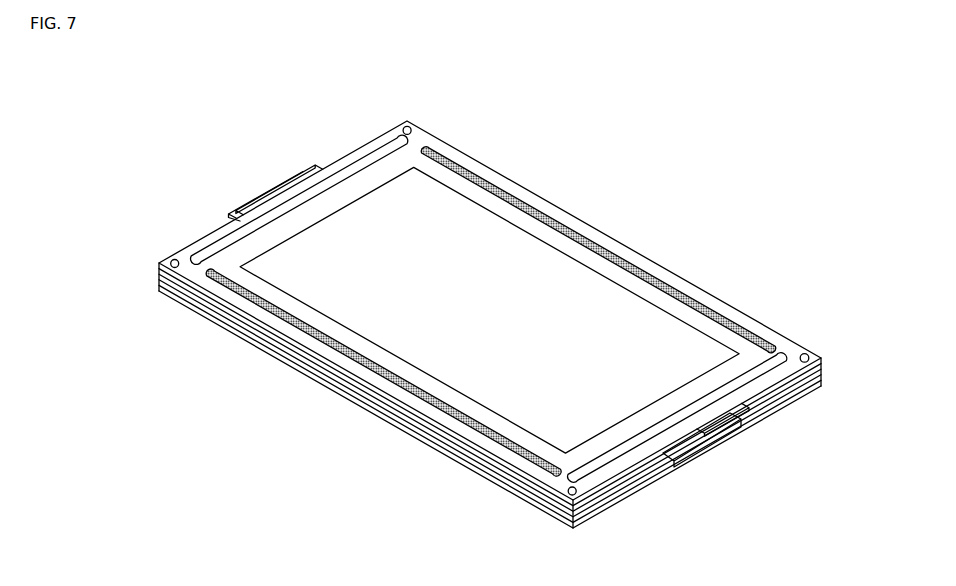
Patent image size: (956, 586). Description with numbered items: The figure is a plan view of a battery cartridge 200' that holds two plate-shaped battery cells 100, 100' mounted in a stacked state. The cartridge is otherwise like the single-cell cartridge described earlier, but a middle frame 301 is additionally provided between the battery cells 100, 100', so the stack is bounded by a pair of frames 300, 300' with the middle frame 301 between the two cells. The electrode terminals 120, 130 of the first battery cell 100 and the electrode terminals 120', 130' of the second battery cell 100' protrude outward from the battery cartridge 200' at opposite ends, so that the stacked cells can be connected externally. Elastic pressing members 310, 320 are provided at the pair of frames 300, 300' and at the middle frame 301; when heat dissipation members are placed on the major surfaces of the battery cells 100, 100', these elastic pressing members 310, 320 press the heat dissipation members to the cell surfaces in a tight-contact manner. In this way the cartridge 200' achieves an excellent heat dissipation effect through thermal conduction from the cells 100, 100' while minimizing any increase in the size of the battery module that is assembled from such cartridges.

The battery cartridge 200' is at (451, 283).
The battery cell 100 is at (490, 406).
The battery cell 100' is at (490, 425).
The electrode terminal 120 is at (255, 172).
The electrode terminal 120' is at (224, 190).
The electrode terminal 130 is at (761, 456).
The electrode terminal 130' is at (727, 478).
The frame 300 is at (490, 409).
The frame 300' is at (490, 327).
The middle frame 301 is at (167, 298).
The elastic pressing member 310 is at (476, 178).
The elastic pressing member 320 is at (252, 309).